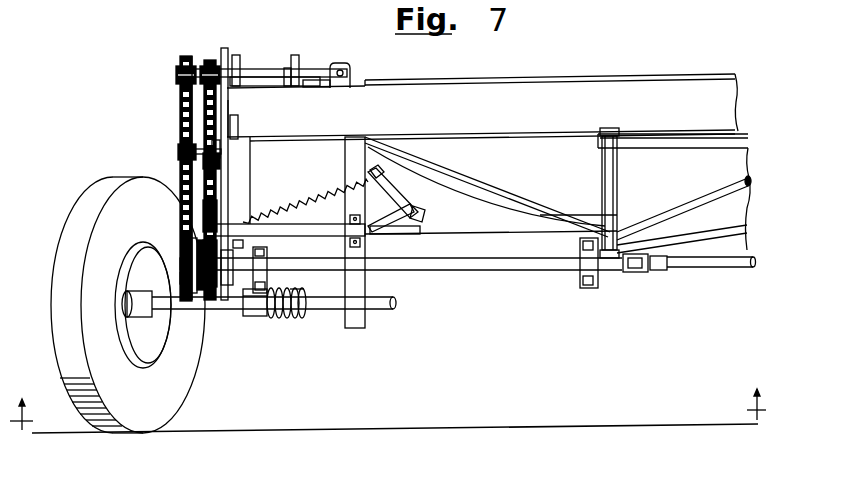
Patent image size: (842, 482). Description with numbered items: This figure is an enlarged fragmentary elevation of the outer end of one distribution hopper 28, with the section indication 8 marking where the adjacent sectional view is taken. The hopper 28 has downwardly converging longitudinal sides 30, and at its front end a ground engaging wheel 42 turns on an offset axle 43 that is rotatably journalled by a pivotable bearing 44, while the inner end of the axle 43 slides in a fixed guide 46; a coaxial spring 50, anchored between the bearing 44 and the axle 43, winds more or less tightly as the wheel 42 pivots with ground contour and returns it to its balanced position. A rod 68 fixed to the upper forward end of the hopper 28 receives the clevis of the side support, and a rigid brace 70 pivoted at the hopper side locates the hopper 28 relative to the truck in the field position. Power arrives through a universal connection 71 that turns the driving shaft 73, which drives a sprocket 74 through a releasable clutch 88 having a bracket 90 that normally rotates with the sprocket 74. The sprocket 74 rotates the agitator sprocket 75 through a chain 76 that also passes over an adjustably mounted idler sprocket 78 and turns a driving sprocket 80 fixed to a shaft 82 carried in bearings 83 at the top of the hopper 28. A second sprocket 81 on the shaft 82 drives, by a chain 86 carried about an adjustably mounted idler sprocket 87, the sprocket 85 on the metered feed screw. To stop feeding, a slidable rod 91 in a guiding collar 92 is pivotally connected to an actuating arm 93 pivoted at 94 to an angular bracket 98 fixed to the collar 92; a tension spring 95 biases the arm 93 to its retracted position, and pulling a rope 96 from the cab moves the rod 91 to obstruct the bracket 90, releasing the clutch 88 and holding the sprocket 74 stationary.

The section line 8- 8 is at (388, 397).
The distribution hopper 28 is at (478, 79).
The longitudinal sides 30 is at (531, 164).
The ground engaging wheel 42 is at (166, 405).
The offset axle 43 is at (230, 302).
The bearing 44 is at (253, 312).
The fixed guide 46 is at (355, 328).
The coaxial spring 50 is at (287, 310).
The rod 68 is at (320, 74).
The rigid brace 70 is at (712, 140).
The universal connection 71 is at (712, 257).
The driving shaft 73 is at (478, 270).
The sprocket 74 is at (200, 300).
The sprocket 75 is at (218, 216).
The chain 76 is at (213, 115).
The adjustably mounted idler sprocket 78 is at (215, 170).
The driving sprocket 80 is at (207, 65).
The second sprocket 81 is at (186, 66).
The shaft 82 is at (262, 73).
The bearings 83 is at (237, 66).
The sprocket 85 is at (187, 268).
The chain 86 is at (182, 105).
The adjustably mounted idler sprocket 87 is at (182, 150).
The releasable clutch 88 is at (190, 250).
The bracket 90 is at (187, 262).
The slidable rod 91 is at (393, 228).
The guiding collar 92 is at (304, 229).
The actuating arm 93 is at (423, 218).
The pivot 94 is at (405, 197).
The tension spring 95 is at (298, 200).
The rope 96 is at (497, 203).
The angular bracket 98 is at (410, 200).